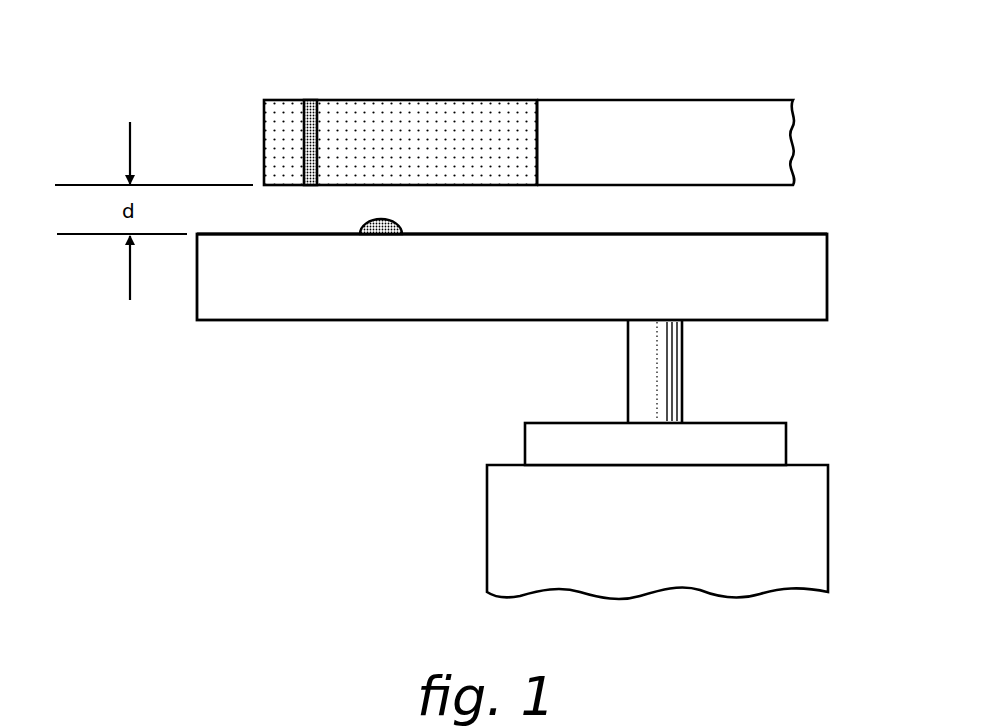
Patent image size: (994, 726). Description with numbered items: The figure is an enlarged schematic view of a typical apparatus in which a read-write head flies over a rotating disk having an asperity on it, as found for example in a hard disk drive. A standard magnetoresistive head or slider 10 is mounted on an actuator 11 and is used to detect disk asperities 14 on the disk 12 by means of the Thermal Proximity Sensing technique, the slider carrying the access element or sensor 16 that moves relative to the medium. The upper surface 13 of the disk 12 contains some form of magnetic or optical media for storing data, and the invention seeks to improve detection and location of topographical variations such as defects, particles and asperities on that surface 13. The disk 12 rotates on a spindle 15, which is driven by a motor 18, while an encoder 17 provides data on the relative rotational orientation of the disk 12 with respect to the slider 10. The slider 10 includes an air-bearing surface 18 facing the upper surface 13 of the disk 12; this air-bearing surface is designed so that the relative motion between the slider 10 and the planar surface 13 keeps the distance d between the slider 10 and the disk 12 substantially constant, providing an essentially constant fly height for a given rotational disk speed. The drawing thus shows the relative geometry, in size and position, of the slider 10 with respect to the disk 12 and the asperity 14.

The slider 10 is at (521, 100).
The actuator 11 is at (750, 62).
The disk 12 is at (330, 316).
The upper surface 13 is at (590, 233).
The asperity 14 is at (400, 222).
The spindle 15 is at (683, 352).
The sensor 16 is at (300, 120).
The encoder 17 is at (835, 408).
The motor 18 is at (490, 186).